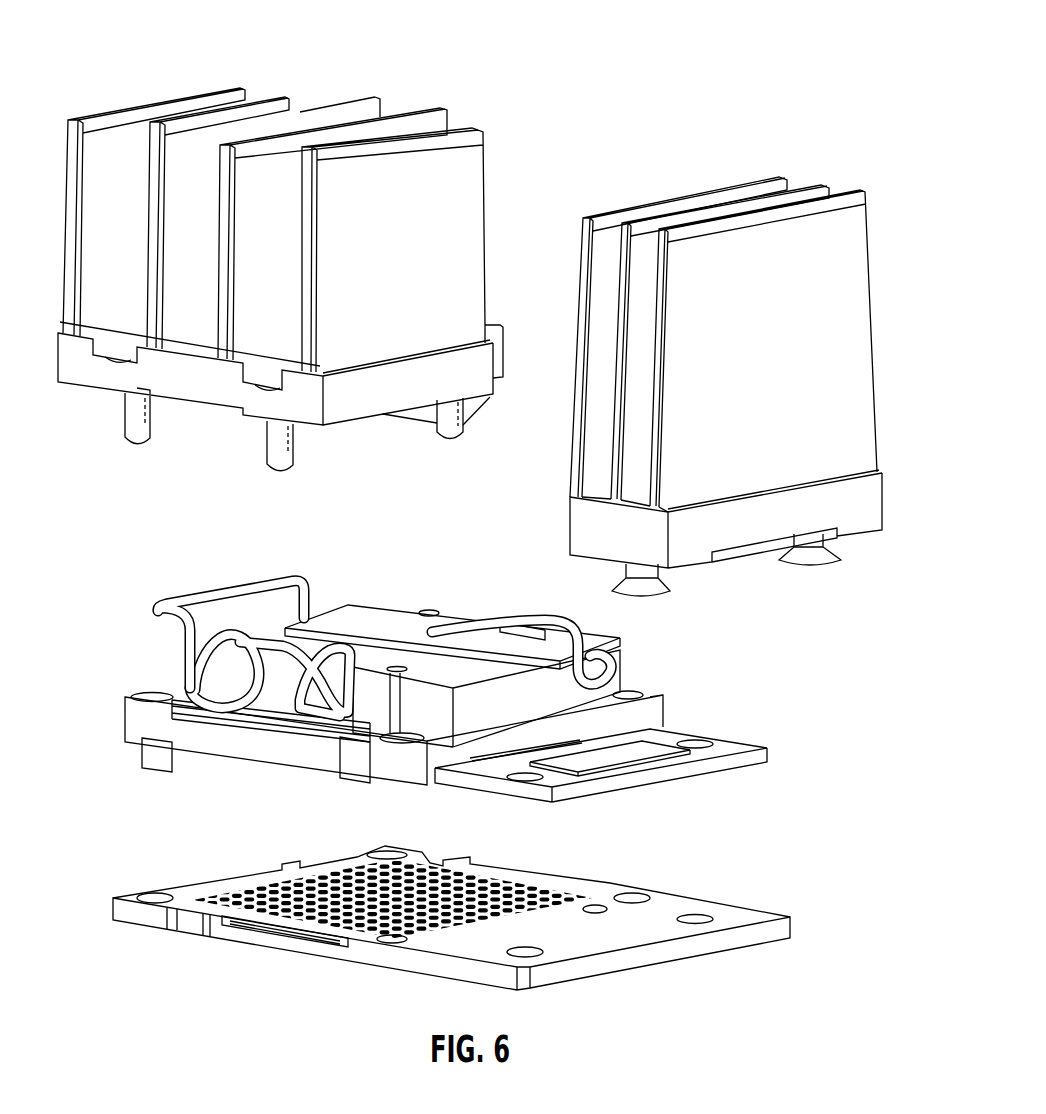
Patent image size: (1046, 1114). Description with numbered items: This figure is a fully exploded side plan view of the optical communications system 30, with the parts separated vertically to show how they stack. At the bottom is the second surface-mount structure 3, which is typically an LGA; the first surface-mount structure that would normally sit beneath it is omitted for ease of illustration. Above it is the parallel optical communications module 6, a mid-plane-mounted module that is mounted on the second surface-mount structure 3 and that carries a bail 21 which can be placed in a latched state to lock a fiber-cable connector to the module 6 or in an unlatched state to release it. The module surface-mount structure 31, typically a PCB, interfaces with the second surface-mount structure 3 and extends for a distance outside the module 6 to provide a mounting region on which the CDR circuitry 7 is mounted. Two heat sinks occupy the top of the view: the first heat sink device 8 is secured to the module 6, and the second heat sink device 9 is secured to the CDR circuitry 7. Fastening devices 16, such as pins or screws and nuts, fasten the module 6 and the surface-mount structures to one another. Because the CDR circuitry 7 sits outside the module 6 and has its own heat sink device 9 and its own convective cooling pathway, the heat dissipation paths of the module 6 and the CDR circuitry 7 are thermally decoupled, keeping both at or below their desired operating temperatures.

The optical communications system 30 is at (107, 53).
The first heat sink device 8 is at (360, 96).
The second heat sink device 9 is at (809, 186).
The fastening device 16 is at (141, 419).
The parallel optical communications module 6 is at (396, 616).
The bail 21 is at (228, 590).
The CDR circuitry 7 is at (663, 748).
The module surface-mount structure 31 is at (727, 748).
The second surface-mount structure 3 is at (745, 914).